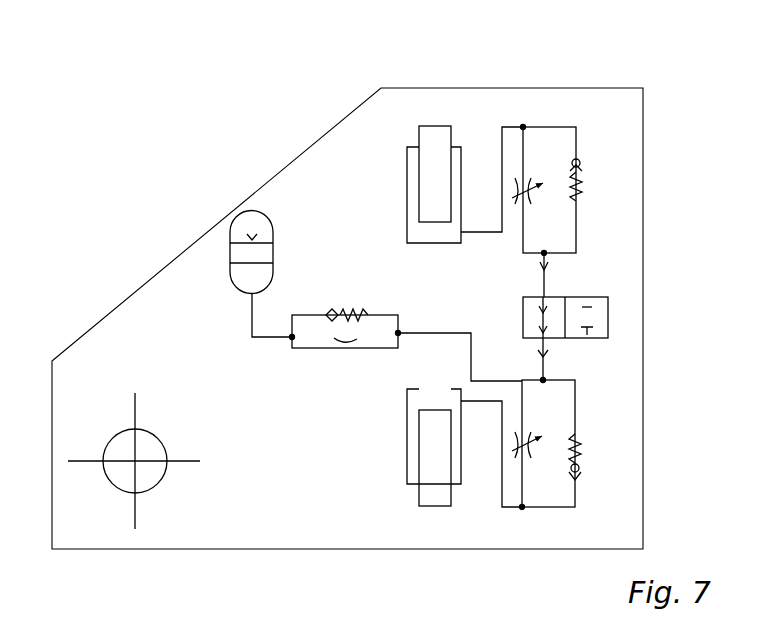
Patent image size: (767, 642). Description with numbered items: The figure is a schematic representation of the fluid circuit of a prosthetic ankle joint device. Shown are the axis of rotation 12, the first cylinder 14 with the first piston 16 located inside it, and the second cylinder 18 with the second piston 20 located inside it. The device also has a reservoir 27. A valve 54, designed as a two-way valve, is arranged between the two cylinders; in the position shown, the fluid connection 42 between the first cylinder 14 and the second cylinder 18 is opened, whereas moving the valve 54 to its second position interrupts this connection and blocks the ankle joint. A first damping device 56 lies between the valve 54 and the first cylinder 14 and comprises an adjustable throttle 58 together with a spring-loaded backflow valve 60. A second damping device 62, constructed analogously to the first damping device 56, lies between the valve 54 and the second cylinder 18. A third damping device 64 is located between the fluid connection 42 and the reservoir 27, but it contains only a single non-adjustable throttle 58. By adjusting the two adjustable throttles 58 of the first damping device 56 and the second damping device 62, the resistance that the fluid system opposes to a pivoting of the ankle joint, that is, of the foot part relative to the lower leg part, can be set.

The axis of rotation 12 is at (130, 466).
The first cylinder 14 is at (408, 399).
The first piston 16 is at (436, 493).
The second cylinder 18 is at (423, 232).
The second piston 20 is at (436, 140).
The reservoir 27 is at (240, 212).
The fluid connection 42 is at (546, 277).
The valve 54 is at (589, 295).
The first damping device 56 is at (602, 420).
The throttle 58 is at (347, 349).
The spring-loaded backflow valve 60 is at (591, 465).
The second damping device 62 is at (594, 130).
The third damping device 64 is at (300, 361).